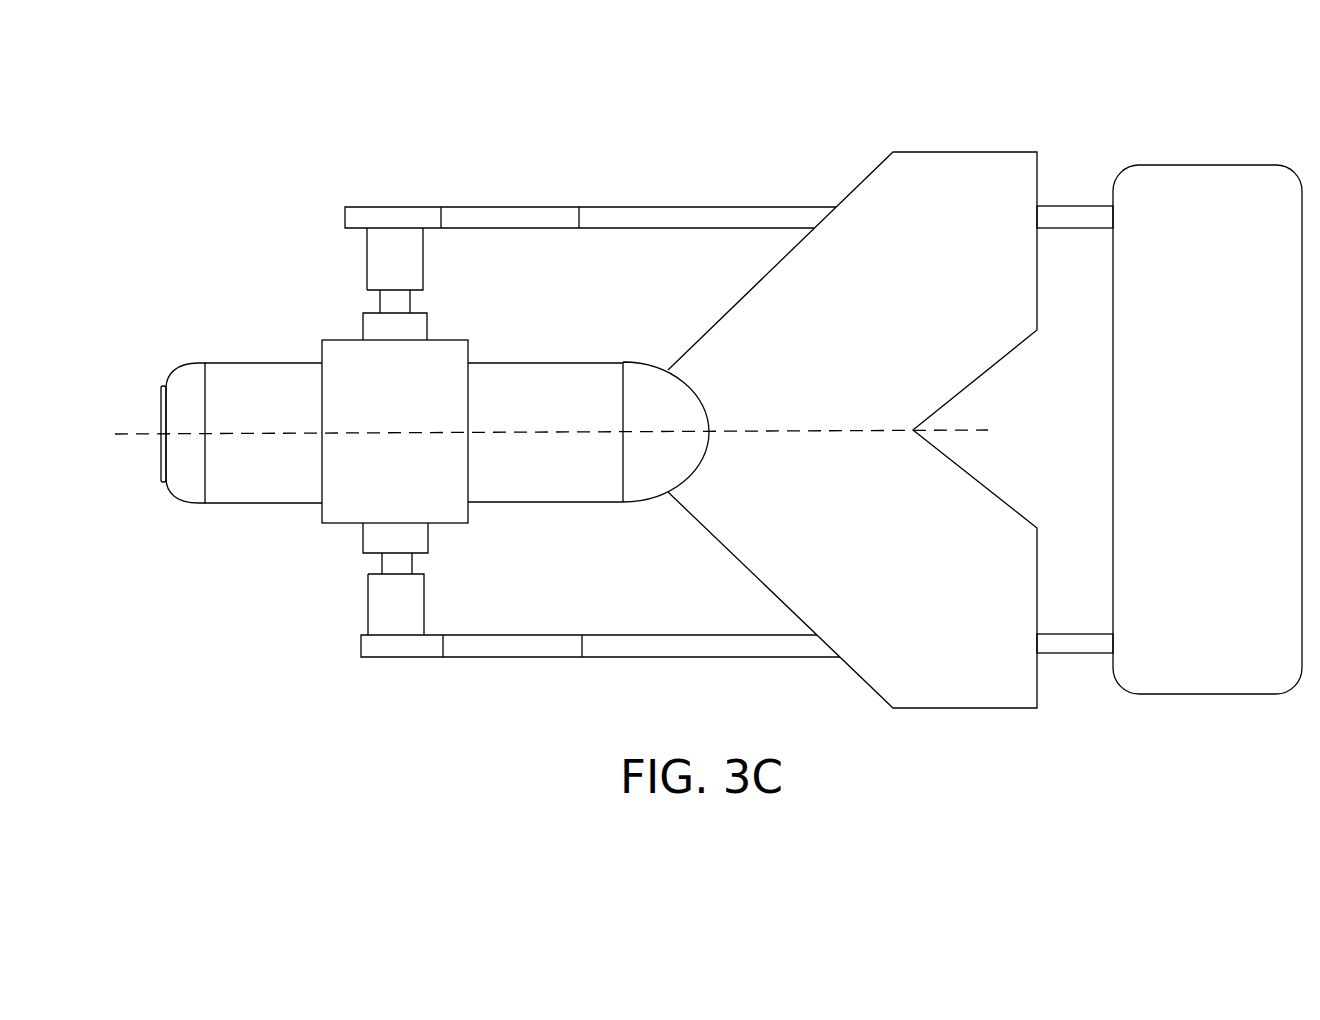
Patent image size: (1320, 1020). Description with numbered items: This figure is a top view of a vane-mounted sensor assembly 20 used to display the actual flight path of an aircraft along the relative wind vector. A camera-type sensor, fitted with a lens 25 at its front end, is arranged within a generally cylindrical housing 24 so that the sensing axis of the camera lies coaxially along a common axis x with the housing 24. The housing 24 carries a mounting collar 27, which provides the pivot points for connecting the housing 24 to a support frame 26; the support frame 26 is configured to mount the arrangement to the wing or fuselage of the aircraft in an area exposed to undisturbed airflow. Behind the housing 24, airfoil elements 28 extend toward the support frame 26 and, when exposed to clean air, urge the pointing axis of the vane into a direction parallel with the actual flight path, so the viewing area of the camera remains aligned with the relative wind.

The sensor assembly 20 is at (696, 389).
The housing 24 is at (248, 475).
The lens 25 is at (164, 384).
The support frame 26 is at (1192, 170).
The mounting collar 27 is at (440, 350).
The airfoil element 28 is at (390, 303).